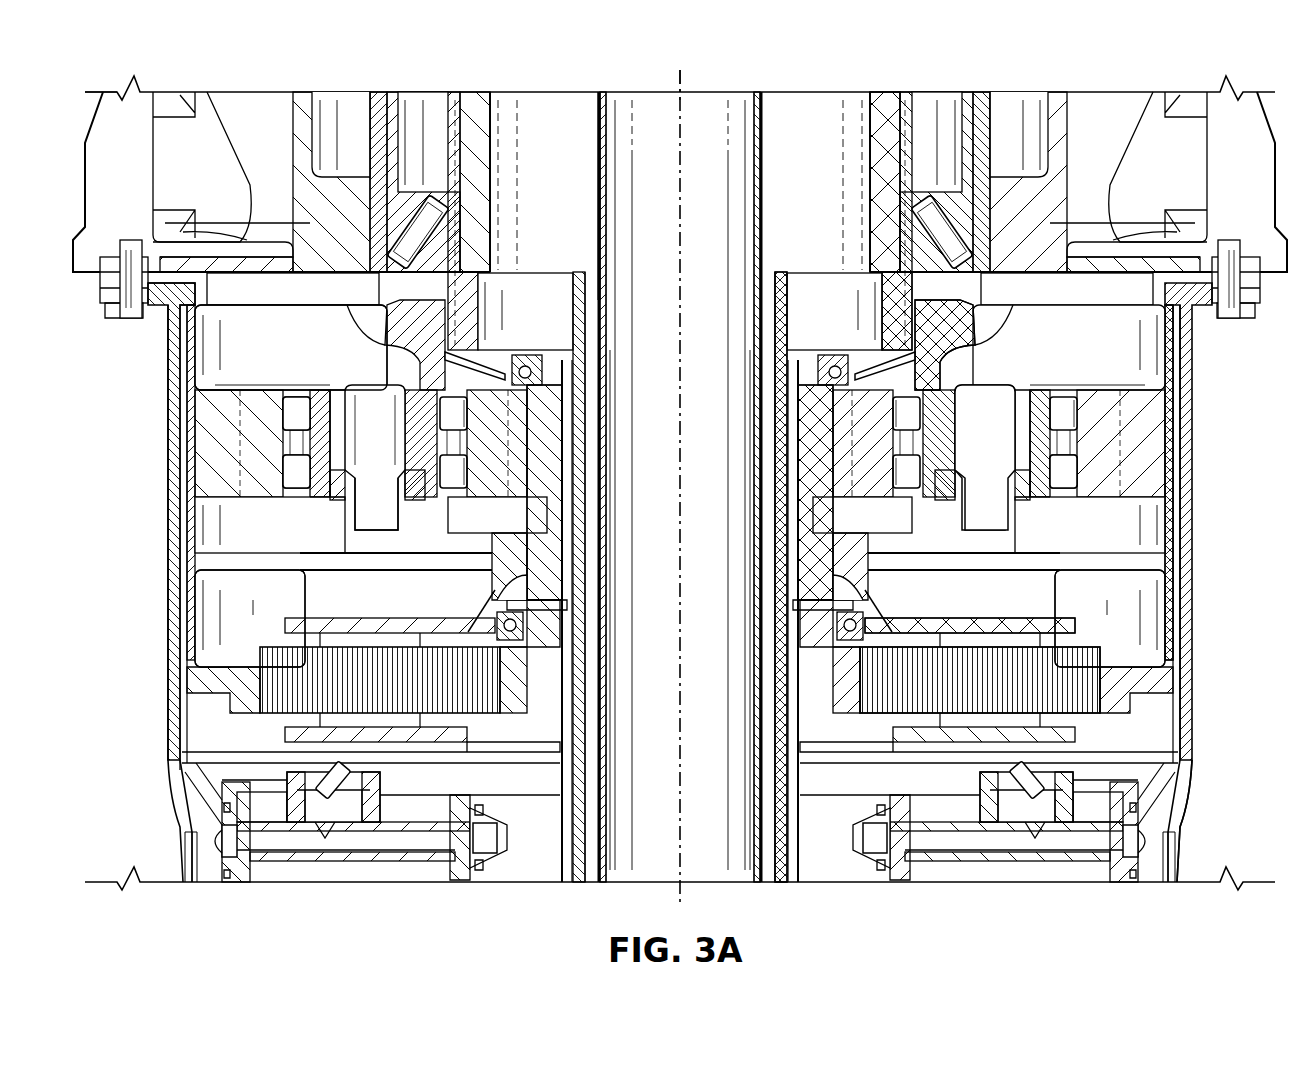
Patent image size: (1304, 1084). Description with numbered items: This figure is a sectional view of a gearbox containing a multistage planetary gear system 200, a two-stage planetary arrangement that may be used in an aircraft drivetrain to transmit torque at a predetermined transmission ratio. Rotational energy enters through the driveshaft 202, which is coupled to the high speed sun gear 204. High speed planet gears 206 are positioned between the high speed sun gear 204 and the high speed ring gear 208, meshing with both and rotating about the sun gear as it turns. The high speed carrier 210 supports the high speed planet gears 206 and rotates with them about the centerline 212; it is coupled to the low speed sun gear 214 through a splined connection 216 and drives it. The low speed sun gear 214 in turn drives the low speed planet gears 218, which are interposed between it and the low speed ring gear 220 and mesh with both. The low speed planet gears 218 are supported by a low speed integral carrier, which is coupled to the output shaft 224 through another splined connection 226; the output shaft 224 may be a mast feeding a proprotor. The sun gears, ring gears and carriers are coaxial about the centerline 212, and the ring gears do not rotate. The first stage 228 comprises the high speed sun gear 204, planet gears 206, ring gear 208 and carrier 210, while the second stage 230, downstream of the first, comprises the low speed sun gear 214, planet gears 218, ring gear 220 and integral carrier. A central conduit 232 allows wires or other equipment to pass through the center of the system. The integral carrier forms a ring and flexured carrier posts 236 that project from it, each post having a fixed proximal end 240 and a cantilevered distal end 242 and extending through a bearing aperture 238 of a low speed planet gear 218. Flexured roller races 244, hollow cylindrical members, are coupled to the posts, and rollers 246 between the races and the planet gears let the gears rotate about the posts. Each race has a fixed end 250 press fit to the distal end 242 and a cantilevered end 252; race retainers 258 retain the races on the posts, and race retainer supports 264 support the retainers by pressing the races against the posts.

The multistage planetary gear system 200 is at (67, 92).
The driveshaft 202 is at (806, 835).
The high speed sun gear 204 is at (808, 705).
The high speed planet gears 206 is at (1083, 705).
The high speed ring gear 208 is at (1130, 705).
The high speed carrier 210 is at (1062, 610).
The centerline 212 is at (688, 84).
The low speed sun gear 214 is at (562, 420).
The splined connection 216 is at (870, 575).
The low speed planet gears 218 is at (1128, 405).
The low speed ring gear 220 is at (1165, 445).
The output shaft 224 is at (870, 170).
The splined connection 226 is at (880, 312).
The first stage 228 is at (215, 710).
The second stage 230 is at (236, 372).
The central conduit 232 is at (597, 145).
The flexured carrier posts 236 is at (385, 500).
The bearing apertures 238 is at (1065, 480).
The fixed proximal end 240 is at (950, 420).
The cantilevered distal end 242 is at (1010, 572).
The flexured roller races 244 is at (283, 438).
The rollers 246 is at (283, 468).
The fixed end 250 is at (318, 503).
The cantilevered end 252 is at (305, 390).
The race retainers 258 is at (1042, 505).
The race retainer supports 264 is at (300, 572).